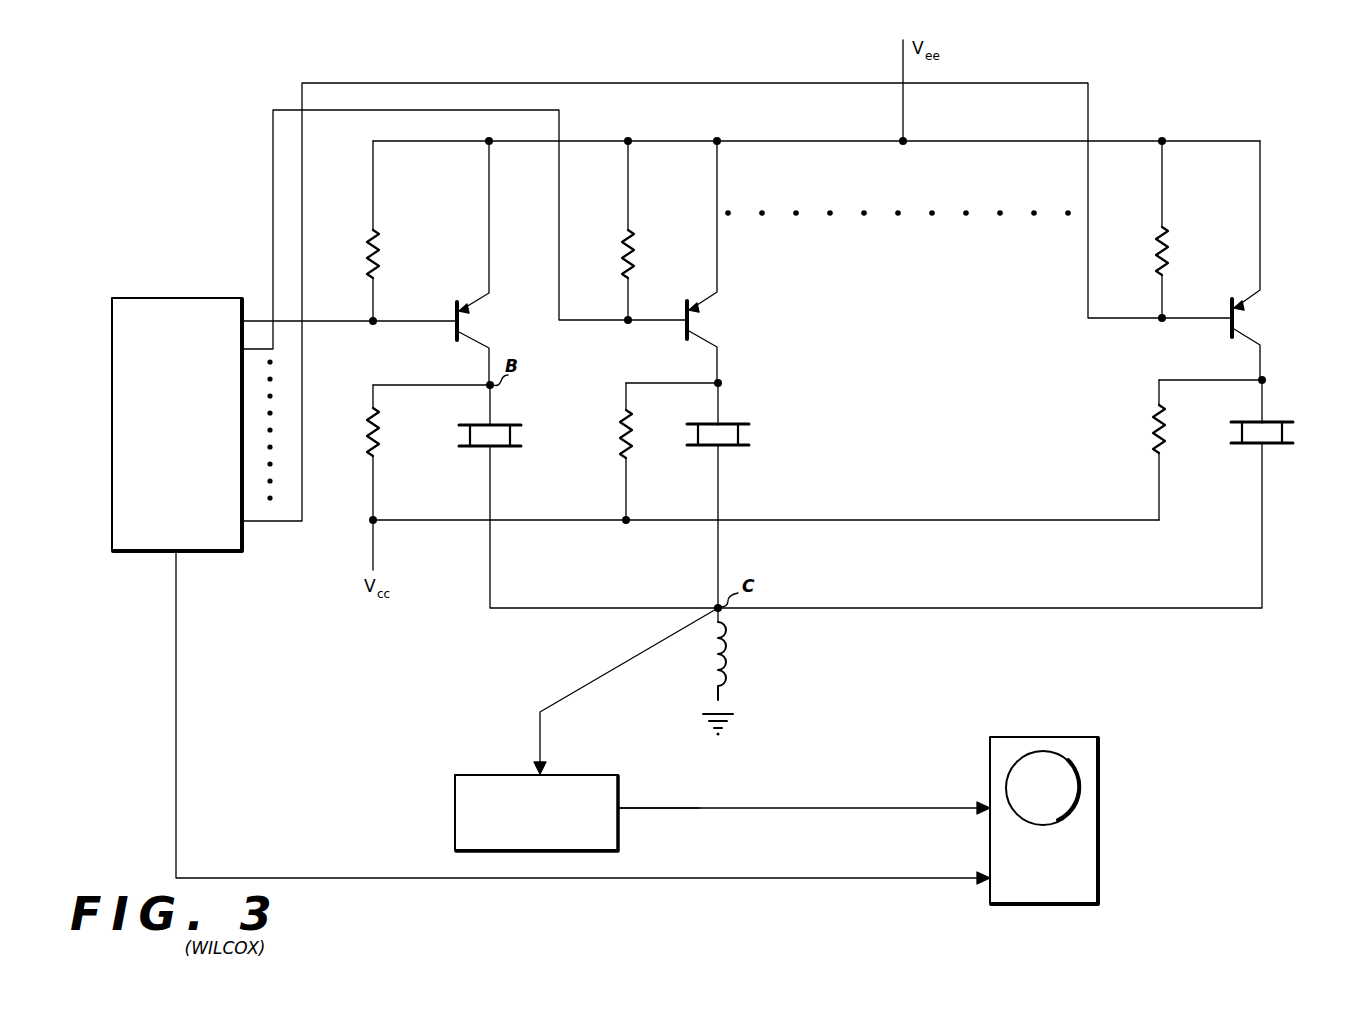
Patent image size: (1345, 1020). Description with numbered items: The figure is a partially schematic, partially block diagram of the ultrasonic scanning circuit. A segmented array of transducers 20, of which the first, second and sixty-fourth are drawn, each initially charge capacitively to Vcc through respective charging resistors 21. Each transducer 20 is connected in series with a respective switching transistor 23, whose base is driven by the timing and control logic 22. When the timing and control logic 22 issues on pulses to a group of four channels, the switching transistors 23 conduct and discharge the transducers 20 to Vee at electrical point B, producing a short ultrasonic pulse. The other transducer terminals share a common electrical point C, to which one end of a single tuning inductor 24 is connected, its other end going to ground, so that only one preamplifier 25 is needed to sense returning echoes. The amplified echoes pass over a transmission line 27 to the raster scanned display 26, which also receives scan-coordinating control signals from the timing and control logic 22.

The transducer 20 is at (482, 452).
The charging resistor 21 is at (373, 455).
The timing and control logic 22 is at (205, 298).
The switching transistor 23 is at (457, 312).
The tuning inductor 24 is at (730, 674).
The preamplifier 25 is at (602, 774).
The raster scanned display 26 is at (1065, 737).
The transmission line 27 is at (776, 808).